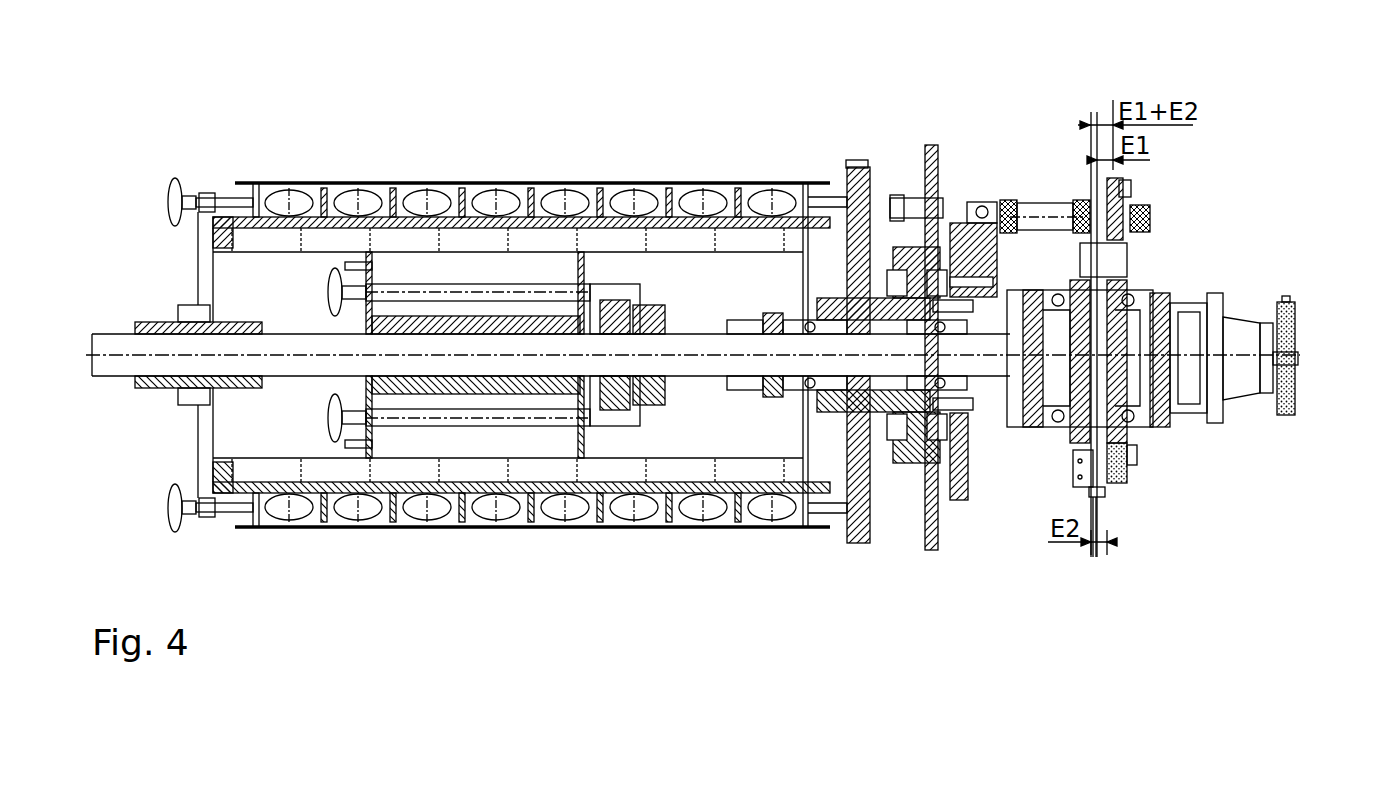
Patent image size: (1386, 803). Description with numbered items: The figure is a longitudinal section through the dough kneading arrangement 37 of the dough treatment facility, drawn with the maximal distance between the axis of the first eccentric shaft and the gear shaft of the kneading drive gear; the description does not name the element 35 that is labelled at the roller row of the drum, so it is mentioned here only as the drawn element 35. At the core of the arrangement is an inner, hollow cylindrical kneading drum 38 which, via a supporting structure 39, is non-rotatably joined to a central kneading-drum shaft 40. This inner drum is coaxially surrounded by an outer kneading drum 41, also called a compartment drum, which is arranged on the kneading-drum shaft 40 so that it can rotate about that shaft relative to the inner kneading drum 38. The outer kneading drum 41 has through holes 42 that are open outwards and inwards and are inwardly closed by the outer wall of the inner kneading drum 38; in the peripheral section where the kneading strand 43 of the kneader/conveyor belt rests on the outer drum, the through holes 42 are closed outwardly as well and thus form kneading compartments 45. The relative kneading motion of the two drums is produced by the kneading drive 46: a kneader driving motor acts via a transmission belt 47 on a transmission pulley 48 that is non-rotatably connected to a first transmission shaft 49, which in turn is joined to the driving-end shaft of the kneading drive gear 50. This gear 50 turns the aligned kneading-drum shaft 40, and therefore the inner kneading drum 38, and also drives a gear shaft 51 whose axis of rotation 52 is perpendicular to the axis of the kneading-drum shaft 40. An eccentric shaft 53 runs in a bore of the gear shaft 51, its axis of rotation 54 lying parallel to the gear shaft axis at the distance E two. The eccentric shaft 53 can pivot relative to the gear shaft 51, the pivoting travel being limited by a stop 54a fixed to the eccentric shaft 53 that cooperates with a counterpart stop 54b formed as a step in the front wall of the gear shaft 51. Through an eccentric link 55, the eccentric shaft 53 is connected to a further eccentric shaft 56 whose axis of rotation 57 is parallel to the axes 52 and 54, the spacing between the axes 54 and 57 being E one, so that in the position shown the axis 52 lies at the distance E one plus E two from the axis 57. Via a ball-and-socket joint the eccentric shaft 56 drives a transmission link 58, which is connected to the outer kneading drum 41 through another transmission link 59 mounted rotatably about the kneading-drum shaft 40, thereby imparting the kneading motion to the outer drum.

The rollers 35 is at (283, 190).
The dough kneading arrangement 37 is at (572, 154).
The inner kneading drum 38 is at (432, 192).
The supporting structure 39 is at (356, 460).
The kneading-drum shaft 40 is at (677, 350).
The outer kneading drum 41 is at (448, 190).
The through holes 42 is at (340, 192).
The kneading strand 43 is at (816, 168).
The kneading compartments 45 is at (365, 190).
The kneading drive 46 is at (1256, 336).
The transmission belt 47 is at (1290, 298).
The transmission pulley 48 is at (1295, 328).
The first transmission shaft 49 is at (1297, 360).
The kneading drive gear 50 is at (1250, 405).
The gear shaft 51 is at (1072, 236).
The axis of rotation 52 is at (1093, 110).
The eccentric shaft 53 is at (1108, 498).
The axis of rotation 54 is at (1097, 548).
The stop 54a is at (1135, 452).
The counterpart stop 54b is at (1125, 483).
The eccentric link 55 is at (1128, 258).
The eccentric shaft 56 is at (1131, 187).
The axis of rotation 57 is at (1110, 176).
The transmission link 58 is at (1025, 202).
The transmission link 59 is at (860, 160).